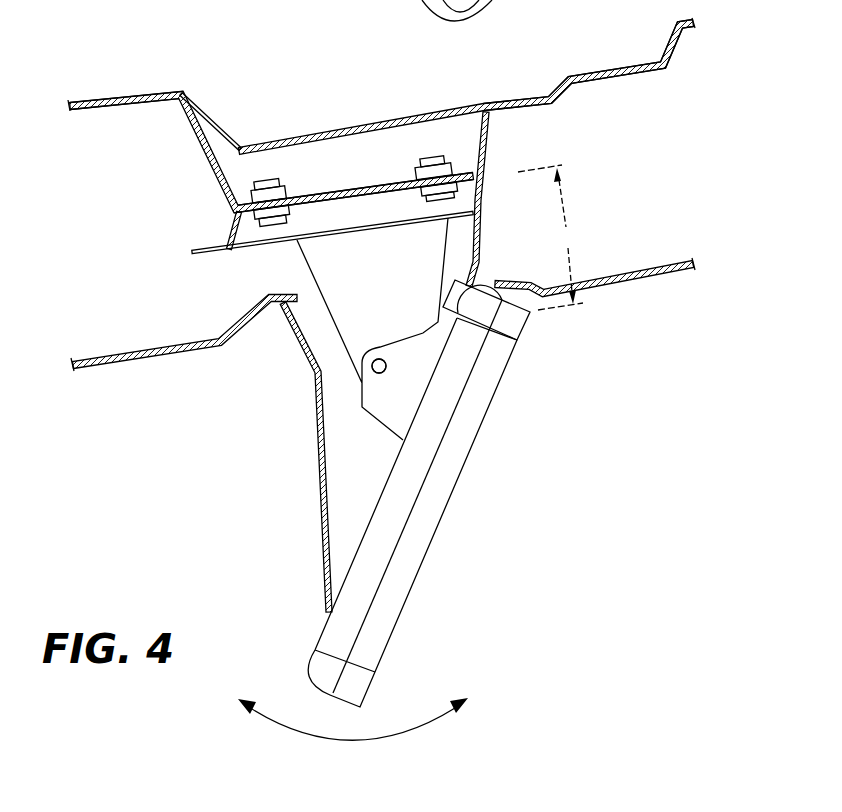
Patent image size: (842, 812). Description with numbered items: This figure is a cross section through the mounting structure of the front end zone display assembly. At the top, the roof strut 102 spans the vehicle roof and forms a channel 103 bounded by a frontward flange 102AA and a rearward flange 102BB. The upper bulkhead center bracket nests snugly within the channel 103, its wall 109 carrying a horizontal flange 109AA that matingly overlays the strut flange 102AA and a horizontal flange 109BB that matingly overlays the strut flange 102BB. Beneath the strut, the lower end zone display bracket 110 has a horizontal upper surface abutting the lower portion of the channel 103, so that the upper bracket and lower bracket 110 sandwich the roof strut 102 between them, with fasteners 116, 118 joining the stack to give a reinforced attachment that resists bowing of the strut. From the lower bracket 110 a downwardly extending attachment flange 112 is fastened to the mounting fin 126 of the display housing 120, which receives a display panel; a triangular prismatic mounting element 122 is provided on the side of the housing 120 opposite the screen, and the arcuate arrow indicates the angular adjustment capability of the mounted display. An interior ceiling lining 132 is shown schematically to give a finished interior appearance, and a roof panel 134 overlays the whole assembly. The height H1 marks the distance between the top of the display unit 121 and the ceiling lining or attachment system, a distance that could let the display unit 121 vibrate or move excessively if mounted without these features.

The roof strut 102 is at (196, 160).
The frontward flange 102AA is at (116, 108).
The rearward flange 102BB is at (530, 111).
The channel 103 is at (338, 150).
The upper bracket wall 109 is at (353, 183).
The horizontal flange 109AA is at (117, 106).
The horizontal flange 109BB is at (530, 104).
The lower end zone display bracket 110 is at (245, 251).
The attachment flange 112 is at (401, 294).
The fastener 116 is at (264, 226).
The fastener 118 is at (253, 180).
The display housing 120 is at (423, 493).
The display unit 121 is at (460, 477).
The mounting element 122 is at (318, 472).
The mounting fin 126 is at (397, 397).
The interior ceiling lining 132 is at (128, 366).
The roof panel 134 is at (393, 124).
The height H1 is at (550, 237).